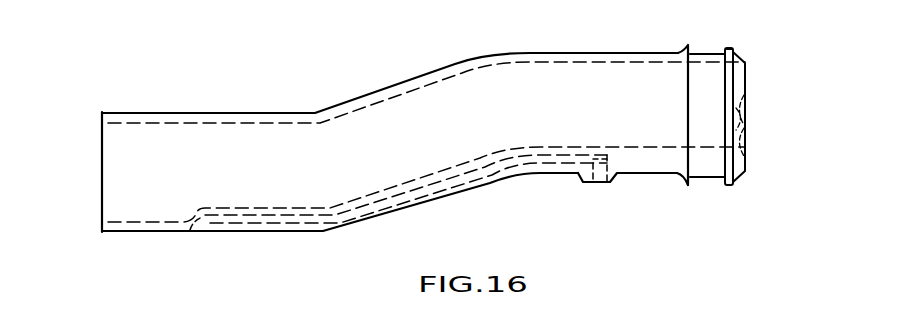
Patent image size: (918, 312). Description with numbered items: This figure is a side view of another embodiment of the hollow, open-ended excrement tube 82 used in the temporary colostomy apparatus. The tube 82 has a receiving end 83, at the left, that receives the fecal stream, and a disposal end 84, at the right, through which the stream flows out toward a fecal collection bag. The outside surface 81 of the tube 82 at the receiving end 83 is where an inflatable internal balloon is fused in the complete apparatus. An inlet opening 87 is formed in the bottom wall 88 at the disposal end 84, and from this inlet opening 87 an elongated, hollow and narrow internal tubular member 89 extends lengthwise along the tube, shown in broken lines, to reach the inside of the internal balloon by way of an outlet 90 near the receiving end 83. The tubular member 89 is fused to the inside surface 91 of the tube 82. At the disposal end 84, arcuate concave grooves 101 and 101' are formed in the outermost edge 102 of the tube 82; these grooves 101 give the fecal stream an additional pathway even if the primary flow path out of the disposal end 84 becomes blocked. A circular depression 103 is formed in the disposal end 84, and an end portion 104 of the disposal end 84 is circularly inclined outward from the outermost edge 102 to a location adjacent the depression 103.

The outside surface 81 is at (125, 233).
The excrement tube 82 is at (409, 68).
The receiving end 83 is at (101, 163).
The disposal end 84 is at (636, 53).
The inlet opening 87 is at (159, 235).
The bottom wall 88 is at (710, 178).
The internal tubular member 89 is at (557, 158).
The outlet 90 is at (197, 233).
The inside surface 91 is at (542, 163).
The arcuate concave grooves 101 is at (778, 112).
The membrane slit 101' is at (783, 151).
The outermost edge 102 is at (747, 73).
The circular depression 103 is at (703, 52).
The end portion 104 is at (737, 55).